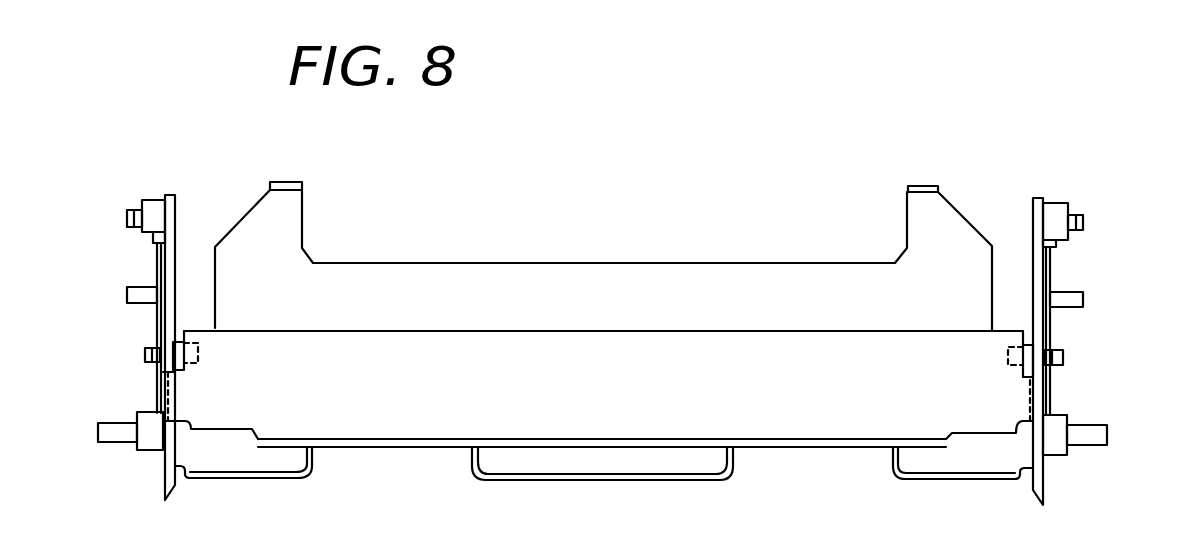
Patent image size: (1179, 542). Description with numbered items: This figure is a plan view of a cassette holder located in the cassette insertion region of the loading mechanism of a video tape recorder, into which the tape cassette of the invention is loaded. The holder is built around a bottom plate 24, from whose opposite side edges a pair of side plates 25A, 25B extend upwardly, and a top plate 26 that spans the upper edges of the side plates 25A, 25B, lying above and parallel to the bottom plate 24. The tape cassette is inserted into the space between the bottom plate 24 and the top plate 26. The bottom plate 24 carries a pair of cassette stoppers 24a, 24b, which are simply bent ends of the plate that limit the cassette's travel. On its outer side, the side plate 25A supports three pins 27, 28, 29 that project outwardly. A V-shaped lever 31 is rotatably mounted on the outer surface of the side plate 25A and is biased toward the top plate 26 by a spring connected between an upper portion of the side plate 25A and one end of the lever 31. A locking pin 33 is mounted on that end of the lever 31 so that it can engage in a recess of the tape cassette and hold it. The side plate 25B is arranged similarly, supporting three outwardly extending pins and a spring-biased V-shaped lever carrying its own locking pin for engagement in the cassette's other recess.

The bottom plate 24 is at (568, 275).
The cassette stopper 24a is at (918, 186).
The cassette stopper 24b is at (287, 182).
The side plate 25A is at (1038, 197).
The side plate 25B is at (169, 193).
The top plate 26 is at (663, 343).
The pin 27 is at (1083, 223).
The pin 28 is at (1083, 300).
The pin 29 is at (1103, 425).
The V-shaped lever 31 is at (1052, 267).
The locking pin 33 is at (1025, 330).